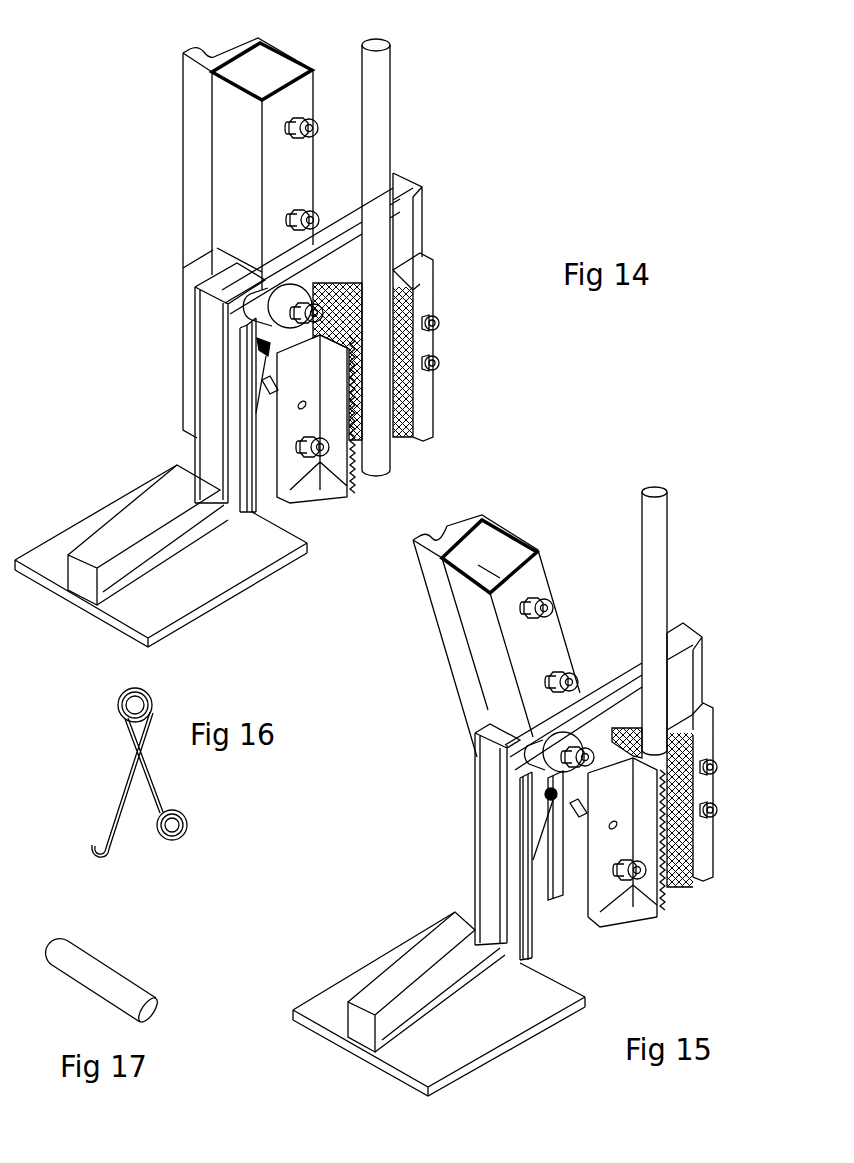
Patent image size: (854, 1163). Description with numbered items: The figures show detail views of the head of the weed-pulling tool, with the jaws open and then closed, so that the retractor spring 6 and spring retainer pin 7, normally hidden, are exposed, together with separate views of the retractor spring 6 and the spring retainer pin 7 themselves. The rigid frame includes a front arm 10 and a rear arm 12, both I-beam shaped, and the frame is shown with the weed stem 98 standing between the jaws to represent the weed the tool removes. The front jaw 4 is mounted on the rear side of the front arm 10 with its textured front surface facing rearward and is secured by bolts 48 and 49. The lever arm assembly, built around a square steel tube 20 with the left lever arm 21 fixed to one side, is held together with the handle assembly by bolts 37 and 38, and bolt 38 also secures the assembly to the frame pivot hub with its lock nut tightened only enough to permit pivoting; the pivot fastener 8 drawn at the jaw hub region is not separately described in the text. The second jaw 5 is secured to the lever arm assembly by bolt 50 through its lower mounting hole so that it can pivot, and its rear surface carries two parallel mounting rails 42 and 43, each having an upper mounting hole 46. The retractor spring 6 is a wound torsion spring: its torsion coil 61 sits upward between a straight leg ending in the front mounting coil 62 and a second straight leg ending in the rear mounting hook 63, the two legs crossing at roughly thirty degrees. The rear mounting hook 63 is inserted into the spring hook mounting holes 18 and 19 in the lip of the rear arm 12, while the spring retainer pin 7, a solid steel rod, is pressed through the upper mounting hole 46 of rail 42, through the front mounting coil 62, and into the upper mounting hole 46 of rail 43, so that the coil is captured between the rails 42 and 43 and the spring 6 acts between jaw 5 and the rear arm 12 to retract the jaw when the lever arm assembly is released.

In FIG. 14, the front jaw 4 is at (436, 266).
In FIG. 15, the front jaw 4 is at (716, 720).
In FIG. 14, the jaw 5 is at (325, 500).
In FIG. 15, the jaw 5 is at (667, 918).
In FIG. 14, the retractor spring 6 is at (258, 347).
In FIG. 15, the retractor spring 6 is at (545, 795).
In FIG. 14, the spring retainer pin 7 is at (265, 382).
In FIG. 15, the spring retainer pin 7 is at (573, 812).
In FIG. 17, the spring retainer pin 7 is at (120, 972).
In FIG. 14, the pivot bolt 8 is at (290, 313).
In FIG. 15, the pivot bolt 8 is at (553, 748).
In FIG. 14, the front arm 10 is at (424, 203).
In FIG. 15, the front arm 10 is at (704, 655).
In FIG. 14, the rear arm 12 is at (227, 300).
In FIG. 15, the rear arm 12 is at (475, 770).
In FIG. 14, the spring hook mounting hole 18 is at (242, 413).
In FIG. 15, the spring hook mounting hole 18 is at (522, 860).
In FIG. 14, the spring hook mounting hole 19 is at (244, 425).
In FIG. 15, the spring hook mounting hole 19 is at (525, 870).
In FIG. 14, the tube 20 is at (232, 88).
In FIG. 15, the tube 20 is at (515, 530).
In FIG. 14, the left lever arm 21 is at (183, 68).
In FIG. 15, the left lever arm 21 is at (430, 625).
In FIG. 14, the bolt 37 is at (283, 132).
In FIG. 15, the bolt 37 is at (552, 600).
In FIG. 14, the bolt 38 is at (285, 222).
In FIG. 15, the bolt 38 is at (575, 680).
In FIG. 15, the mounting rail 42 is at (597, 925).
In FIG. 15, the mounting rail 43 is at (557, 900).
In FIG. 14, the upper mounting hole 46 is at (306, 408).
In FIG. 15, the upper mounting hole 46 is at (617, 828).
In FIG. 14, the bolt 48 is at (440, 323).
In FIG. 15, the bolt 48 is at (718, 767).
In FIG. 14, the bolt 49 is at (440, 363).
In FIG. 15, the bolt 49 is at (718, 814).
In FIG. 14, the bolt 50 is at (320, 452).
In FIG. 15, the bolt 50 is at (645, 878).
In FIG. 16, the torsion coil 61 is at (118, 712).
In FIG. 16, the front mounting coil 62 is at (190, 823).
In FIG. 16, the rear mounting hook 63 is at (103, 846).
In FIG. 14, the weed stem 98 is at (392, 98).
In FIG. 15, the weed stem 98 is at (669, 528).